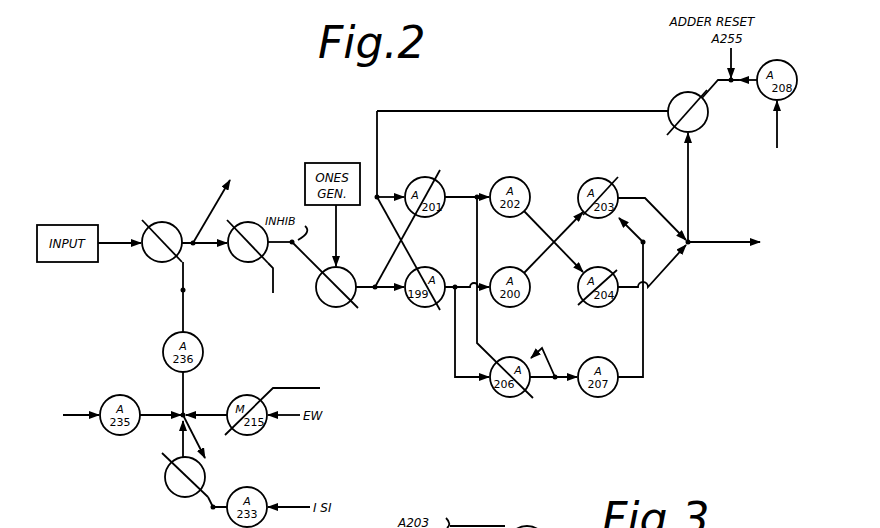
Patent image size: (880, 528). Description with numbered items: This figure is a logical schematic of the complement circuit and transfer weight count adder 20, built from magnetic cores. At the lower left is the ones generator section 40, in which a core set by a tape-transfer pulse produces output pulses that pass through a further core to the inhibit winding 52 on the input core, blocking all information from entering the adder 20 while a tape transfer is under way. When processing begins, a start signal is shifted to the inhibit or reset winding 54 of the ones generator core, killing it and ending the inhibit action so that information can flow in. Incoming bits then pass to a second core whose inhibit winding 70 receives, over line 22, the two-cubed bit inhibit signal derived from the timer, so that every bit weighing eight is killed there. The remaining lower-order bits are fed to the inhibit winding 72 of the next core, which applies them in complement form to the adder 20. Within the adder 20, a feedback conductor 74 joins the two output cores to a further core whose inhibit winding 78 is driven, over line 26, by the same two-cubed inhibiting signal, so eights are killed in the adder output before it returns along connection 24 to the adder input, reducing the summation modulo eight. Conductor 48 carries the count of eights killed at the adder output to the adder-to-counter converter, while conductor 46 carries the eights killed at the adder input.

In FIG. 2, the inhibit winding 52 is at (163, 222).
In FIG. 2, the conductor 46 is at (210, 212).
In FIG. 2, the inhibit winding 70 is at (248, 222).
In FIG. 2, the 2^3 bit inhibit line from A229 22 is at (271, 284).
In FIG. 2, the inhibit winding 72 is at (343, 306).
In FIG. 2, the feedback line 24 is at (445, 110).
In FIG. 2, the adder circuit 20 is at (558, 106).
In FIG. 2, the inhibit winding 78 is at (693, 92).
In FIG. 2, the 2^3 bit inhibit line from A229 26 is at (779, 129).
In FIG. 2, the feedback conductor 74 is at (690, 162).
In FIG. 2, the conductor 48 is at (726, 244).
In FIG. 3, the conductor 48 is at (476, 525).
In FIG. 2, the inhibit or reset winding 54 is at (178, 458).
In FIG. 2, the input circuit 40 is at (145, 453).